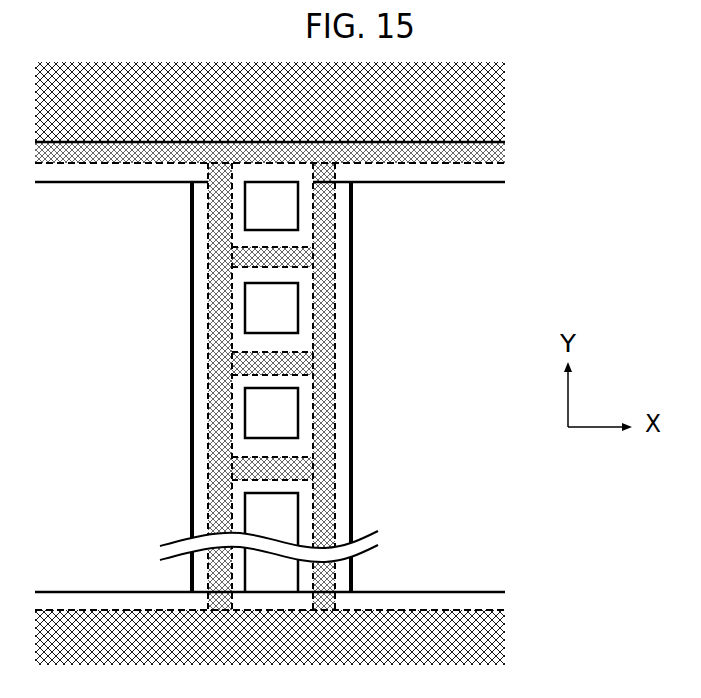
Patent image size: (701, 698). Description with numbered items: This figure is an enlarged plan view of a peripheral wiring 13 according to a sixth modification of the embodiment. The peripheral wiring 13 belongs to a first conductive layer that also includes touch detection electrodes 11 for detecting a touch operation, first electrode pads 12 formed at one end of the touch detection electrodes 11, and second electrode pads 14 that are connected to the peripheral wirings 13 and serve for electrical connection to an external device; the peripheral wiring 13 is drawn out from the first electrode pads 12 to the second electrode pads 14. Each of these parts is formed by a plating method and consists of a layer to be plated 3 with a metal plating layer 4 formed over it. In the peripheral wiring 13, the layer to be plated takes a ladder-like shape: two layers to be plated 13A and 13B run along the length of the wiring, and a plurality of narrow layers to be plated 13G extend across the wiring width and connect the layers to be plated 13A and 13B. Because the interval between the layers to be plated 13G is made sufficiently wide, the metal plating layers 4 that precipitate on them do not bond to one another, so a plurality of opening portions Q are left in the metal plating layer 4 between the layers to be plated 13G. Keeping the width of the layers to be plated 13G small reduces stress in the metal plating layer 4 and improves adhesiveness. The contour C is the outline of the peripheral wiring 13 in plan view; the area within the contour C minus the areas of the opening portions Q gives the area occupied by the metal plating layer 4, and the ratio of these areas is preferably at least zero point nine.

The touch detection electrode 11 is at (505, 102).
The first electrode pad 12 is at (485, 174).
The peripheral wiring 13 is at (346, 243).
The second electrode pad 14 is at (490, 603).
The layer to be plated 3 is at (208, 243).
The metal plating layer 4 is at (200, 280).
The layer to be plated 13A is at (216, 333).
The layer to be plated 13B is at (330, 328).
The layer to be plated 13G is at (216, 465).
The opening portion Q is at (270, 412).
The contour C is at (356, 462).